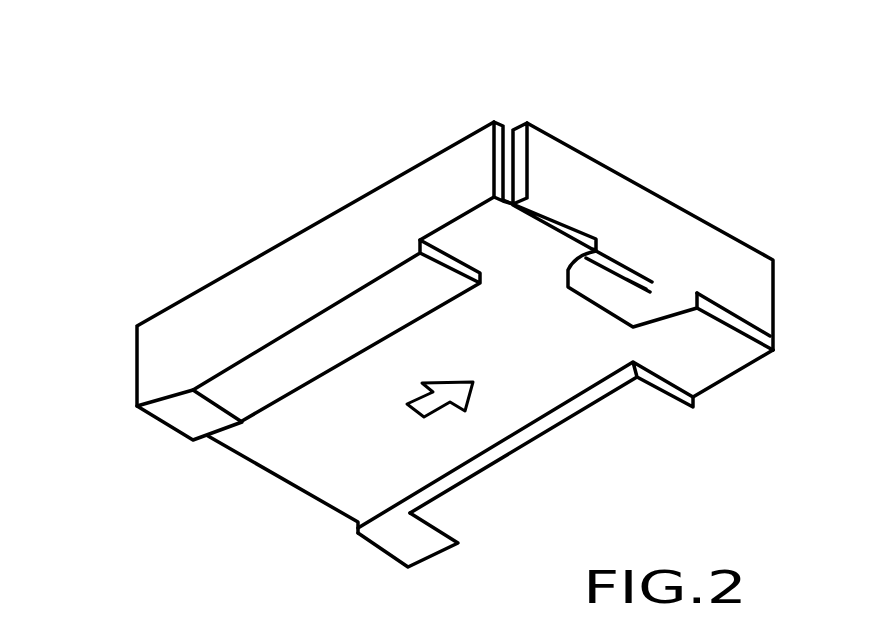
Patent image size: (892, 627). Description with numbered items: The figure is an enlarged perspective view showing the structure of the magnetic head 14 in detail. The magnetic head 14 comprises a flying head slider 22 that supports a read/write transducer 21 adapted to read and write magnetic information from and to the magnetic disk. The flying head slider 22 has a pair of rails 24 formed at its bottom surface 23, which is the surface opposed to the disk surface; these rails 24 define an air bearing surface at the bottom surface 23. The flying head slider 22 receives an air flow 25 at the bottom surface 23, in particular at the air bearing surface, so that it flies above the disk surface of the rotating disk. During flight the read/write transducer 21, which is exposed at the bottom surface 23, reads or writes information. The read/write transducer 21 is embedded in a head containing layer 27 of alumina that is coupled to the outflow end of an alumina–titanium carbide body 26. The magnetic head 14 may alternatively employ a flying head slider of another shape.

The magnetic head 14 is at (178, 234).
The read/write transducer 21 is at (629, 279).
The flying head slider 22 is at (633, 178).
The bottom surface 23 is at (334, 491).
The rails 24 is at (448, 303).
The air flow 25 is at (410, 403).
The Al2O3-TiC body 26 is at (501, 126).
The head containing layer 27 is at (582, 160).